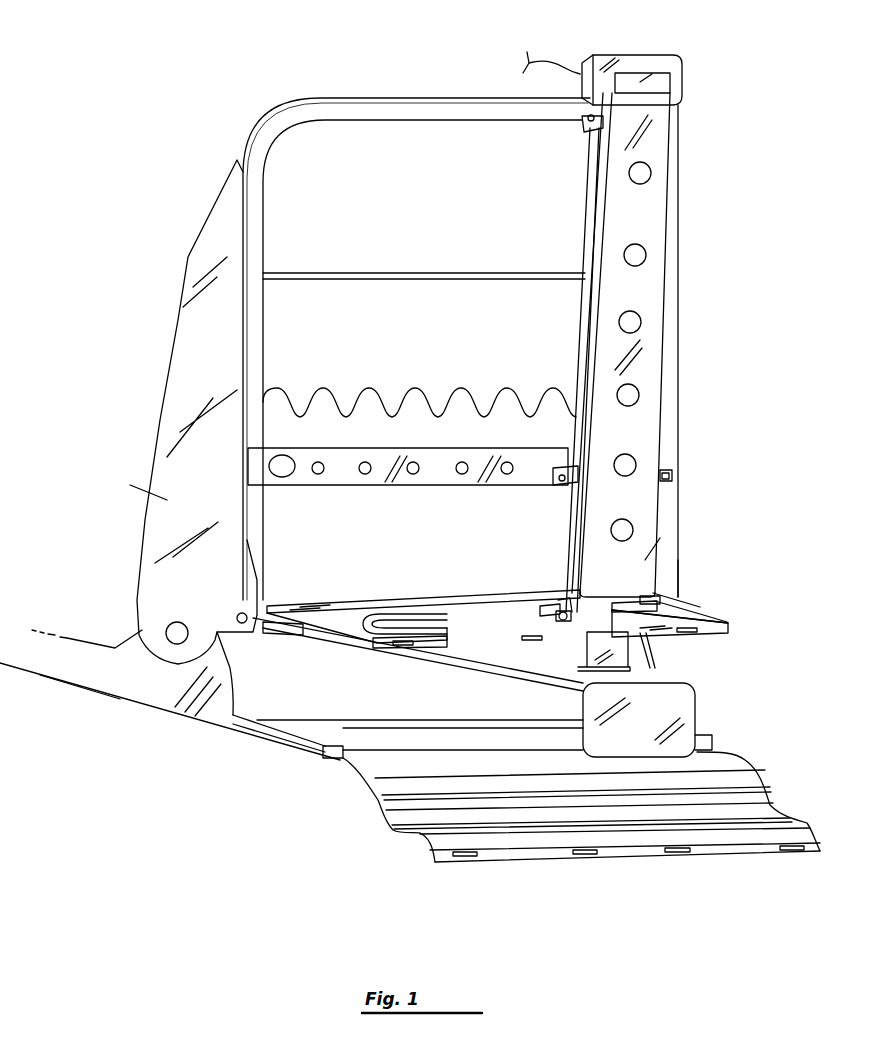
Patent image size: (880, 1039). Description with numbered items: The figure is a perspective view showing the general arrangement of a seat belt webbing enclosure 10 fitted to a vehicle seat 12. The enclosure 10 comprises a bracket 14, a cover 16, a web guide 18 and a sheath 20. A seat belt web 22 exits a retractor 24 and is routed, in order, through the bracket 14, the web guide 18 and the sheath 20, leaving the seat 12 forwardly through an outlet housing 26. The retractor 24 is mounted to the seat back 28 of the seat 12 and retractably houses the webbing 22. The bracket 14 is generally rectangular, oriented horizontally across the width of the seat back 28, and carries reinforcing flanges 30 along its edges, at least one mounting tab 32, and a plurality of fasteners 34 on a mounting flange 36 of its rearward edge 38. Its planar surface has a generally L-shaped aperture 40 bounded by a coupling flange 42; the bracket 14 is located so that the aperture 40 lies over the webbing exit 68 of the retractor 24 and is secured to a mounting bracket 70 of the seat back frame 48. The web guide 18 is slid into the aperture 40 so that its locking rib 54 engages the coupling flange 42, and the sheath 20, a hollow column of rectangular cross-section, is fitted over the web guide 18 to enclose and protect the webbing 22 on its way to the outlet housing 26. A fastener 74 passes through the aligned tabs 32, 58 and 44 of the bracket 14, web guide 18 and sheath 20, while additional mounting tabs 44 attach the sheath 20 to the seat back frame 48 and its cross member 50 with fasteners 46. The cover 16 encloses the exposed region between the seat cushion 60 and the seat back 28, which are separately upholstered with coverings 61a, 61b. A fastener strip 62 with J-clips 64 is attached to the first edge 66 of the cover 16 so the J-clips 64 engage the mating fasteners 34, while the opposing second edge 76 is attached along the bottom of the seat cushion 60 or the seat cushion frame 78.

The seat belt webbing enclosure 10 is at (760, 731).
The vehicle seat 12 is at (118, 572).
The bracket 14 is at (718, 617).
The cover 16 is at (375, 786).
The web guide 18 is at (679, 572).
The sheath 20 is at (668, 406).
The seat belt web 22 is at (580, 74).
The retractor 24 is at (698, 710).
The outlet housing 26 is at (684, 56).
The seat back 28 is at (178, 312).
The reinforcing flange 30 is at (333, 602).
The mounting tab 32 is at (545, 610).
The fastener 34 is at (403, 647).
The mounting flange 36 is at (735, 626).
The rearward edge 38 is at (390, 648).
The aperture 40 is at (403, 611).
The coupling flange 42 is at (432, 616).
The mounting tab 44 is at (597, 130).
The fastener 46 is at (586, 124).
The seat back frame 48 is at (348, 97).
The cross member 50 is at (342, 486).
The locking rib 54 is at (652, 600).
The mounting tab 58 is at (561, 608).
The seat cushion 60 is at (152, 705).
The covering 61a is at (75, 677).
The covering 61b is at (130, 485).
The fastener strip 62 is at (440, 857).
The J-clip 64 is at (466, 857).
The first edge 66 is at (547, 860).
The webbing exit 68 is at (655, 672).
The mounting bracket 70 is at (278, 632).
The fastener 74 is at (560, 614).
The second edge 76 is at (367, 768).
The seat cushion frame 78 is at (497, 685).